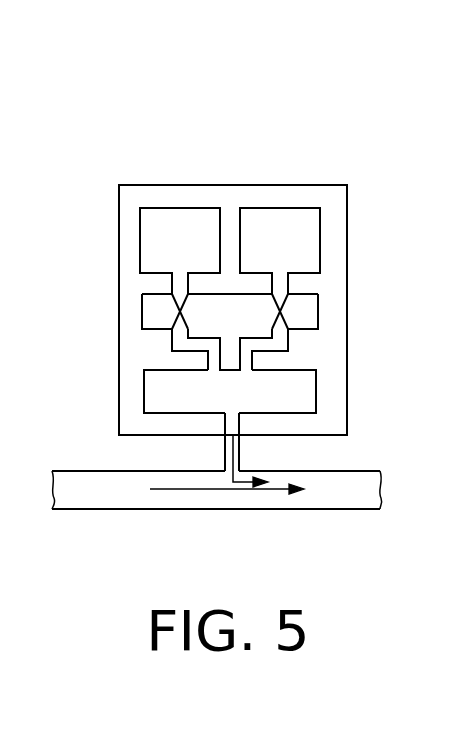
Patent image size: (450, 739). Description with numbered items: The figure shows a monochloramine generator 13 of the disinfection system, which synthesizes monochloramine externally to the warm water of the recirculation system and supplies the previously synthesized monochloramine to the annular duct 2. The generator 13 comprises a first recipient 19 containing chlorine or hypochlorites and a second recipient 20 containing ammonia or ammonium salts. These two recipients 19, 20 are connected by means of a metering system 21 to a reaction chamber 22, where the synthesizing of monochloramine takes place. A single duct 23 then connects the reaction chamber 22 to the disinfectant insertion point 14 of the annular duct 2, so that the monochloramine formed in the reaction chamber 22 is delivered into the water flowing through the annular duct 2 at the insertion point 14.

The annular duct 2 is at (100, 471).
The monochloramine generator 13 is at (340, 202).
The disinfectant insertion point 14 is at (240, 510).
The first recipient 19 is at (184, 223).
The second recipient 20 is at (287, 223).
The metering system 21 is at (310, 308).
The reaction chamber 22 is at (305, 388).
The single duct 23 is at (240, 465).